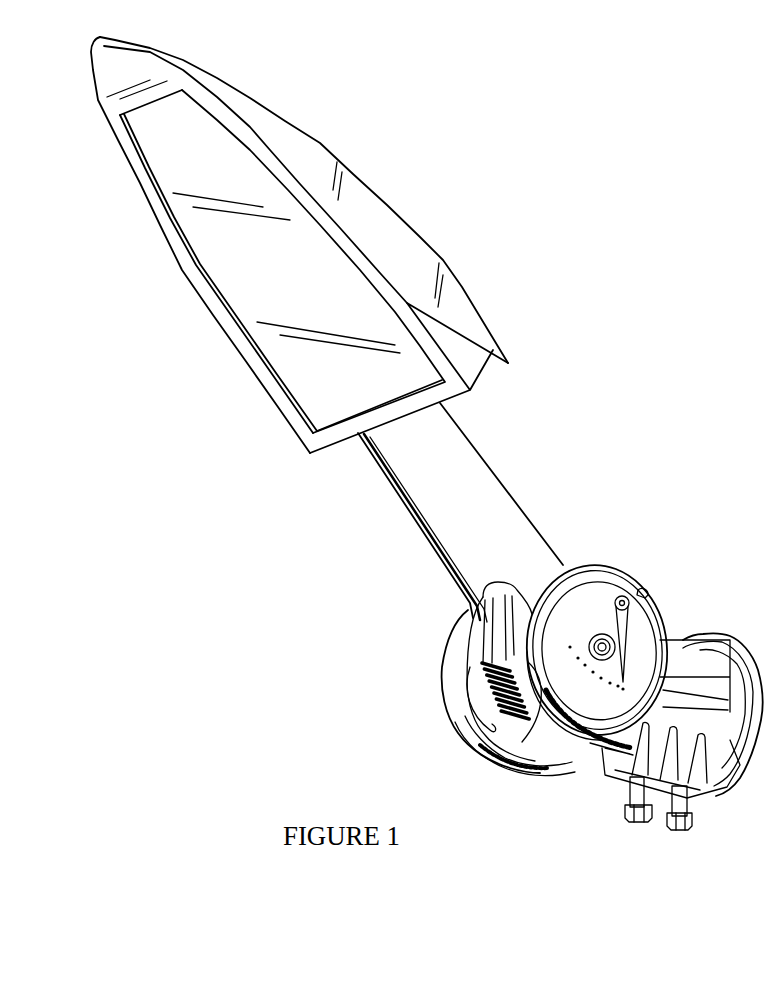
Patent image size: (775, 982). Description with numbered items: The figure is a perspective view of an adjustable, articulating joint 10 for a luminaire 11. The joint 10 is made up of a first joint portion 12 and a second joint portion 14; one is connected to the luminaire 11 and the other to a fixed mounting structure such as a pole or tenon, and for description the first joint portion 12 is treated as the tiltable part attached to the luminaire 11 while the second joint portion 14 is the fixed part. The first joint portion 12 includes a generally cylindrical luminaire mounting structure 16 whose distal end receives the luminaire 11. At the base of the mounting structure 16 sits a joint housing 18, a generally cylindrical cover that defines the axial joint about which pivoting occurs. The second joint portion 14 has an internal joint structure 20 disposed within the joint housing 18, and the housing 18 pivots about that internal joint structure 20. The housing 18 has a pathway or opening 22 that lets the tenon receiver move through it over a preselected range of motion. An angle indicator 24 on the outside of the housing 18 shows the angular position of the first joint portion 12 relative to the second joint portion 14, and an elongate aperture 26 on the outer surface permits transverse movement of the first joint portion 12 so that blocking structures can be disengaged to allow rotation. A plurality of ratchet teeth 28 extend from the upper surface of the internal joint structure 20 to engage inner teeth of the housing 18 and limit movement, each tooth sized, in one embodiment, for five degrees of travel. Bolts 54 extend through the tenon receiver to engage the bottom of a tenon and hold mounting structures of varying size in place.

The adjustable joint 10 is at (662, 230).
The luminaire 11 is at (396, 168).
The first joint portion 12 is at (535, 485).
The second joint portion 14 is at (742, 607).
The luminaire mounting structure 16 is at (392, 446).
The joint housing 18 is at (452, 660).
The internal joint structure 20 is at (508, 741).
The opening 22 is at (537, 792).
The angle indicator 24 is at (630, 627).
The elongate aperture 26 is at (593, 610).
The ratchet teeth 28 is at (475, 722).
The bolts 54 is at (632, 795).